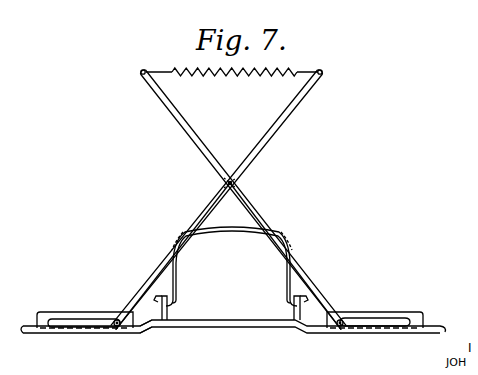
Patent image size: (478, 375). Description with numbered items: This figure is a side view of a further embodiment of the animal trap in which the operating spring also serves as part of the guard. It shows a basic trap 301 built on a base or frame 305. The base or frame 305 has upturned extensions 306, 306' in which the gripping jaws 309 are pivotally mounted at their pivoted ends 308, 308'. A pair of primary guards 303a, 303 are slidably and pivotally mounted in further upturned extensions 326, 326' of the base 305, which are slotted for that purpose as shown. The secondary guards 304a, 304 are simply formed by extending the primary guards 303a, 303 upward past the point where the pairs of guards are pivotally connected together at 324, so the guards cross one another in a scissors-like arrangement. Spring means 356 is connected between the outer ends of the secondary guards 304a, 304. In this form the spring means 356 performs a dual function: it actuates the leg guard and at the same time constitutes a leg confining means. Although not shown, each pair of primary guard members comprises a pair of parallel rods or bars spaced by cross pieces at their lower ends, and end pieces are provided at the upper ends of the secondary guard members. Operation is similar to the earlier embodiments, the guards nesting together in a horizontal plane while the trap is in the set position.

The basic trap 301 is at (268, 335).
The base or frame 305 is at (152, 329).
The upturned extension 326 is at (83, 306).
The upturned extension 326' is at (375, 309).
The secondary guard 304a is at (182, 121).
The secondary guard 304 is at (284, 123).
The primary guard 303 is at (257, 214).
The primary guard 303a is at (193, 216).
The pivotal connection 324 is at (236, 184).
The spring means 356 is at (237, 76).
The gripping jaws 309 is at (232, 232).
The upturned extension 306 is at (180, 323).
The upturned extension 306' is at (273, 308).
The pivoted end 308 is at (182, 298).
The pivoted end 308' is at (330, 290).